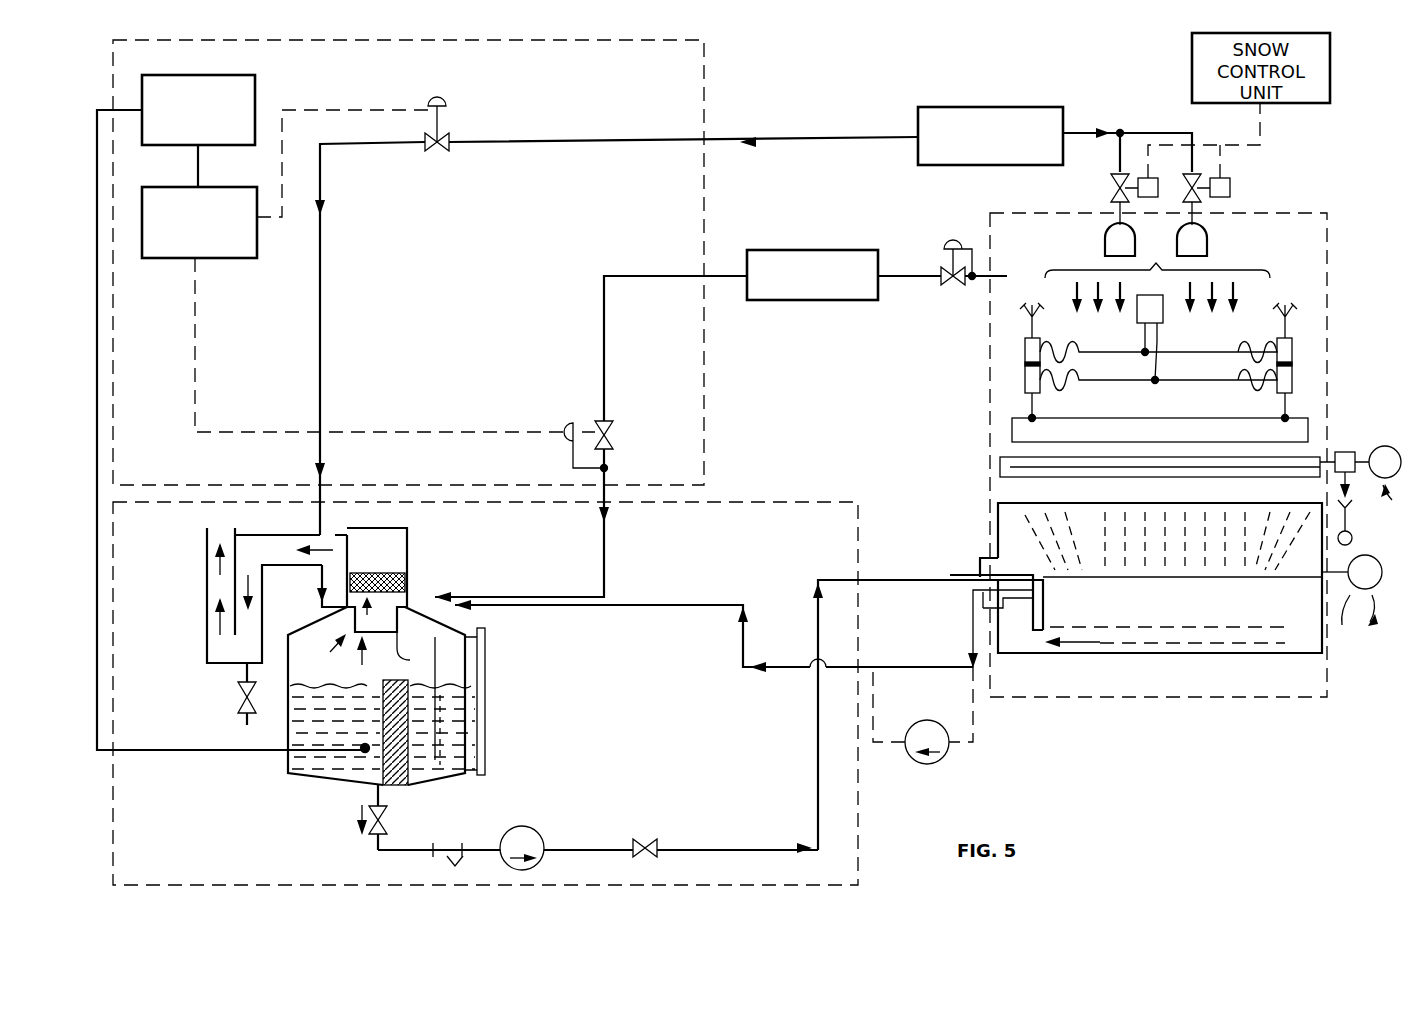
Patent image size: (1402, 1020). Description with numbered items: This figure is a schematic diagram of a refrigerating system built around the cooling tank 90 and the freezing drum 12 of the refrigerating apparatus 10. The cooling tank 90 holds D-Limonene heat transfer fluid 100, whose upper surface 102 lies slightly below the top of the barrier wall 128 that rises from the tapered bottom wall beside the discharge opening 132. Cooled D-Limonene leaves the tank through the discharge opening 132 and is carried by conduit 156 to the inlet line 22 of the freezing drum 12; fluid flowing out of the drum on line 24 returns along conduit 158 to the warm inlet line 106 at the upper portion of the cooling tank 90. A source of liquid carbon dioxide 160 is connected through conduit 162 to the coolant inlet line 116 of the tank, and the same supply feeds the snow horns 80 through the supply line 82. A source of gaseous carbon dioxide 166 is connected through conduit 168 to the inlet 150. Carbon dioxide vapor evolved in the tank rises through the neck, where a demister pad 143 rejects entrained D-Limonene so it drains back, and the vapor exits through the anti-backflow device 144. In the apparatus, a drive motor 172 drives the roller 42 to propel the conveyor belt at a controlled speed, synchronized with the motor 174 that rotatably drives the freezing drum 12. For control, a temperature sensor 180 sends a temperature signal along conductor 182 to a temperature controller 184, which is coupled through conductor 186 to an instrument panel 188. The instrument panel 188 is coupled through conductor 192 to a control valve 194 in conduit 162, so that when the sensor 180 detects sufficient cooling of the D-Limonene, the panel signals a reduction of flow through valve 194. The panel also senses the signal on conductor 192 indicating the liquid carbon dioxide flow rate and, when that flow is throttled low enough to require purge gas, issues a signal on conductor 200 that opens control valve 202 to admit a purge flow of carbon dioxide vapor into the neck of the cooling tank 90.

The refrigerating apparatus 10 is at (1327, 318).
The freezing drum 12 is at (1322, 558).
The inlet line 22 is at (895, 578).
The line 24 is at (973, 628).
The roller 42 is at (1322, 457).
The snow horns 80 is at (1162, 242).
The supply line 82 is at (1075, 129).
The cooling tank 90 is at (312, 620).
The D-Limonene heat transfer fluid 100 is at (322, 722).
The upper surface 102 is at (338, 684).
The inlet line 106 is at (550, 608).
The inlet line 116 is at (333, 595).
The barrier wall 128 is at (398, 640).
The discharge opening 132 is at (377, 780).
The demister pad 143 is at (405, 585).
The anti-backflow device 144 is at (198, 614).
The inlet 150 is at (470, 590).
The conduit 156 is at (420, 845).
The conduit 158 is at (745, 650).
The source of liquid carbon dioxide 160 is at (1030, 107).
The conduit 162 is at (845, 130).
The source of gaseous carbon dioxide 166 is at (835, 300).
The conduit 168 is at (604, 545).
The drive motor 172 is at (1383, 446).
The motor 174 is at (1360, 602).
The temperature sensor 180 is at (362, 752).
The conductor 182 is at (201, 752).
The temperature controller 184 is at (257, 85).
The conductor 186 is at (200, 165).
The instrument panel 188 is at (226, 258).
The conductor 192 is at (338, 104).
The control valve 194 is at (445, 124).
The conductor 200 is at (405, 447).
The control valve 202 is at (570, 420).